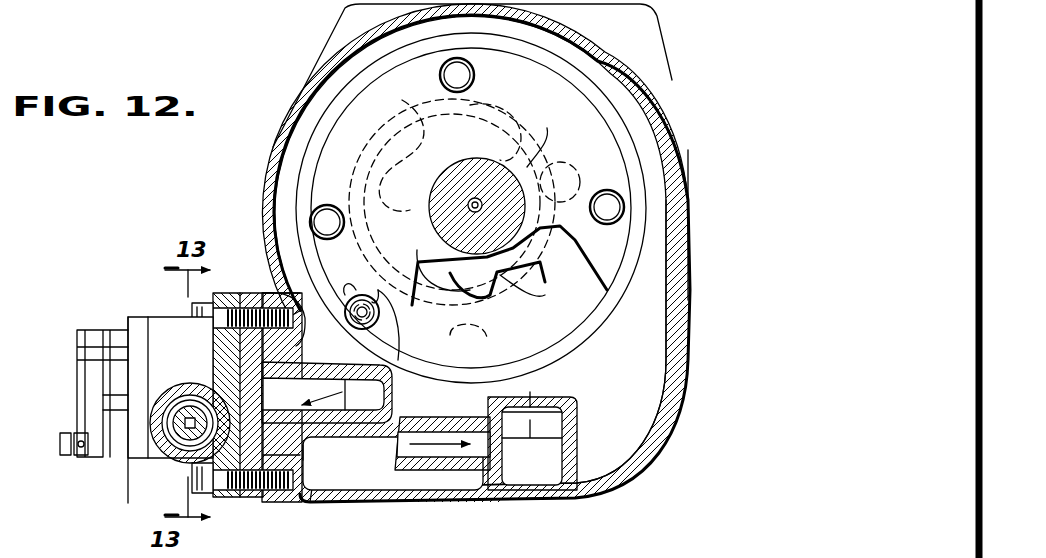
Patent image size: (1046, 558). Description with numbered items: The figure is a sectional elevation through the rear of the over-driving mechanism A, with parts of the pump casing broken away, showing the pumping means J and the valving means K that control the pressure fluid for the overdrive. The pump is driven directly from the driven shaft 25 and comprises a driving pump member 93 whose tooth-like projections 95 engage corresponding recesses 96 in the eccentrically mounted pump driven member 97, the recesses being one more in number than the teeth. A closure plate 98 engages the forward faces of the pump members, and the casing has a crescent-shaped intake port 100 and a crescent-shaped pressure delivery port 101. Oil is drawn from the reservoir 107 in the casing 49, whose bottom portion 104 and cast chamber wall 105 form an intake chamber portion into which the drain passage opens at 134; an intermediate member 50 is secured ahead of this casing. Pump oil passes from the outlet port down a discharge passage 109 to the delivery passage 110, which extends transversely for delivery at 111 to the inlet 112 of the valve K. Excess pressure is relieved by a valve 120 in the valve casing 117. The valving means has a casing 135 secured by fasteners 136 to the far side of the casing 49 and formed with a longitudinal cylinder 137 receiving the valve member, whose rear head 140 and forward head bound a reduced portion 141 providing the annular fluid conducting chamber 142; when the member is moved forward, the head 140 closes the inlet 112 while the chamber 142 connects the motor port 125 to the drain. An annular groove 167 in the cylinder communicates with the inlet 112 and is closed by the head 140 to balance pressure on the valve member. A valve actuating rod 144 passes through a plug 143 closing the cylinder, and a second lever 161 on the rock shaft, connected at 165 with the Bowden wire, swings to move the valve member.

The closure plate 98 is at (560, 85).
The over-driving mechanism A is at (304, 100).
The casing 49 is at (678, 138).
The pressure delivery port 101 is at (489, 98).
The driven shaft 25 is at (527, 167).
The pump driven member 97 is at (560, 287).
The recesses 96 is at (490, 332).
The port 125 is at (400, 332).
The intake port 100 is at (477, 206).
The driving pump member 93 is at (466, 238).
The tooth-like projections 95 is at (450, 204).
The valve casing 117 is at (355, 300).
The valve 120 is at (378, 290).
The bottom portion 104 is at (397, 500).
The delivery 111 is at (267, 372).
The reservoir 107 is at (327, 496).
The discharge passage 109 is at (370, 410).
The delivery passage 110 is at (320, 418).
The drain opening 134 is at (490, 443).
The chamber wall 105 is at (548, 398).
The plug 143 is at (548, 452).
The intermediate member 50 is at (535, 551).
The inlet 112 is at (209, 377).
The casing 135 is at (266, 298).
The fasteners 136 is at (192, 316).
The valve actuating rod 144 is at (190, 432).
The reduced portion 141 is at (242, 443).
The cylinder 137 is at (143, 376).
The annular fluid conducting chamber 142 is at (192, 384).
The valve K is at (177, 440).
The rear head 140 is at (140, 440).
The second lever 161 is at (93, 393).
The annular groove 167 is at (170, 423).
The Bowden wire connection 165 is at (77, 457).
The pumping means J is at (416, 74).